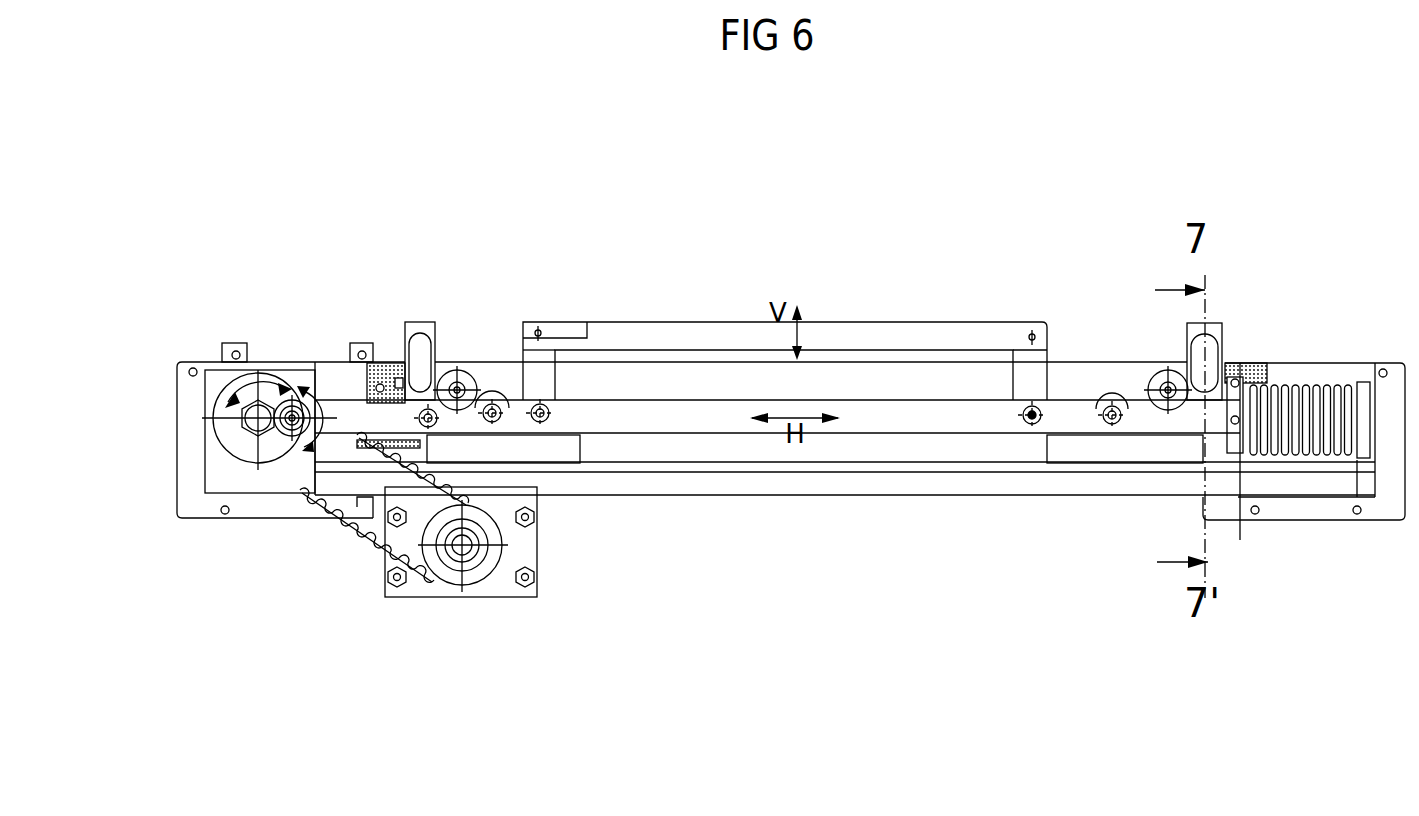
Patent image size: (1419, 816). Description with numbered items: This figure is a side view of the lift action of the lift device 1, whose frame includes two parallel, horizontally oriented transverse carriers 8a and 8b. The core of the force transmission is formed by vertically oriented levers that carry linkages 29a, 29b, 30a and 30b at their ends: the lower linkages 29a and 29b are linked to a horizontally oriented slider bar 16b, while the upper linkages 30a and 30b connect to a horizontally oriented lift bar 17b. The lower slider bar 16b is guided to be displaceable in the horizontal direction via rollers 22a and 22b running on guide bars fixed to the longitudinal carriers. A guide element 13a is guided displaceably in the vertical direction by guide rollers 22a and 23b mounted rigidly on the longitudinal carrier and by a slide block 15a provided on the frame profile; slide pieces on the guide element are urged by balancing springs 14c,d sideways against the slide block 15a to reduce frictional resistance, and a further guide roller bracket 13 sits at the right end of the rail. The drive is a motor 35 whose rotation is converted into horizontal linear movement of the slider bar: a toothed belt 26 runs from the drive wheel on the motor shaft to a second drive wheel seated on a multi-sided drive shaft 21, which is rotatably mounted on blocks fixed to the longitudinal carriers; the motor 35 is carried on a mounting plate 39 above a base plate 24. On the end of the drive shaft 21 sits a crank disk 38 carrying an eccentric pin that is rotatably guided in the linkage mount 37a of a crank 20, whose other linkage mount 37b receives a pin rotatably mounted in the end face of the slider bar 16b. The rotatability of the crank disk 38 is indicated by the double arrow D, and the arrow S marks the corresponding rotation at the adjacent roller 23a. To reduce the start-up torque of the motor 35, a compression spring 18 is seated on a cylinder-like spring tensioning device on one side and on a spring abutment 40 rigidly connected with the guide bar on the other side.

The lift device 1 is at (962, 300).
The transverse carrier 8a is at (188, 505).
The transverse carrier 8b is at (1337, 510).
The guide roller bracket 13 is at (1167, 279).
The guide element 13a is at (437, 334).
The balancing springs 14c,d is at (417, 322).
The slide block 15a is at (383, 362).
The slider bar 16b is at (885, 420).
The lift bar 17b is at (885, 340).
The compression spring 18 is at (1283, 390).
The crank 20 is at (352, 448).
The drive shaft 21 is at (292, 419).
The roller 22a is at (584, 567).
The roller 22b is at (1108, 402).
The roller 23a is at (459, 385).
The guide roller 23b is at (1172, 400).
The base plate 24 is at (213, 485).
The toothed belt 26 is at (400, 560).
The linkage 29a is at (657, 292).
The linkage 29b is at (1032, 424).
The linkage 30a is at (588, 334).
The linkage 30b is at (1030, 322).
The drive motor 35 is at (485, 615).
The linkage mount 37a is at (288, 470).
The linkage mount 37b is at (536, 574).
The crank disk 38 is at (286, 468).
The motor 39 is at (477, 575).
The spring abutment 40 is at (1240, 540).
The double arrow D is at (250, 385).
The rotation direction S is at (303, 398).